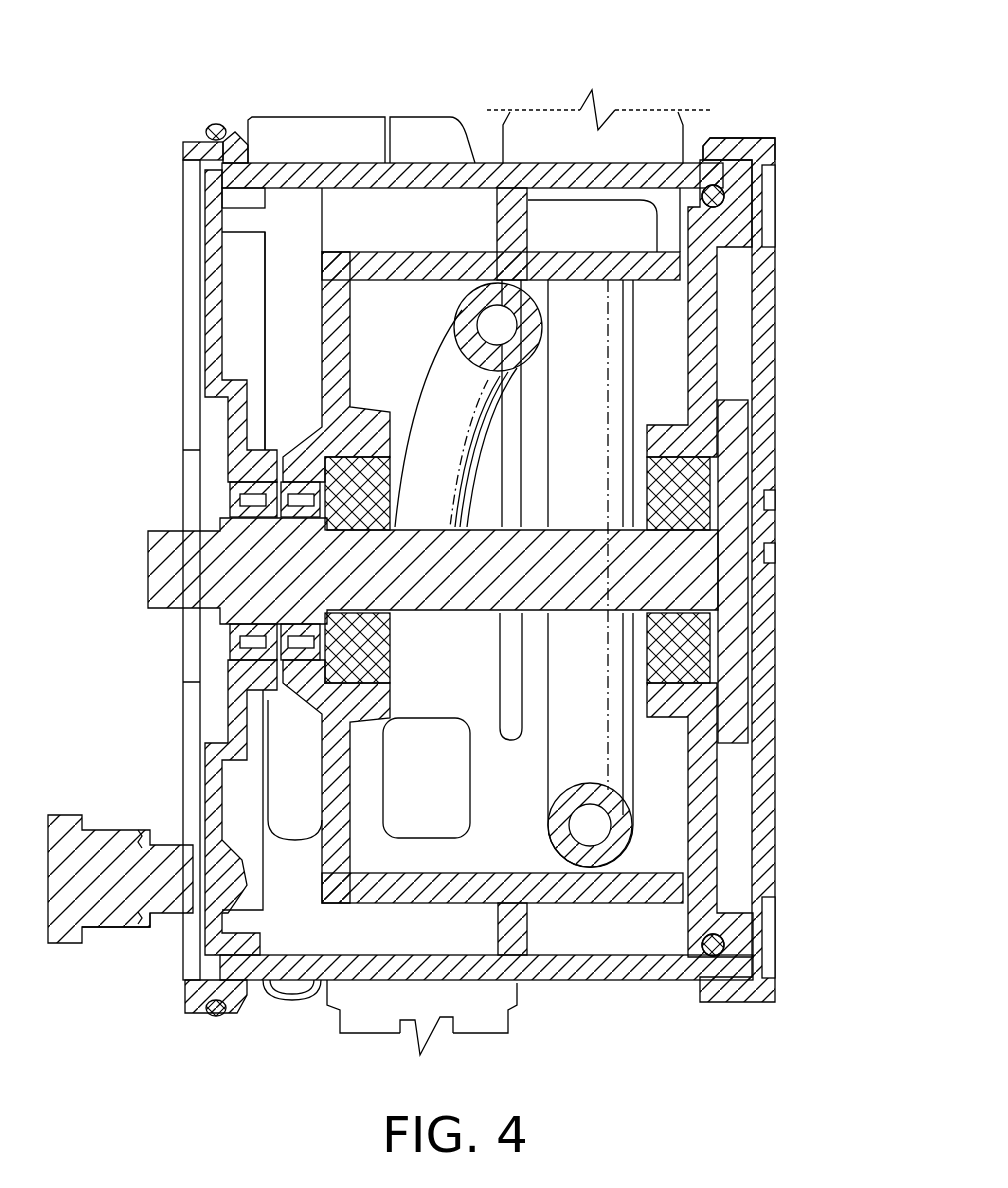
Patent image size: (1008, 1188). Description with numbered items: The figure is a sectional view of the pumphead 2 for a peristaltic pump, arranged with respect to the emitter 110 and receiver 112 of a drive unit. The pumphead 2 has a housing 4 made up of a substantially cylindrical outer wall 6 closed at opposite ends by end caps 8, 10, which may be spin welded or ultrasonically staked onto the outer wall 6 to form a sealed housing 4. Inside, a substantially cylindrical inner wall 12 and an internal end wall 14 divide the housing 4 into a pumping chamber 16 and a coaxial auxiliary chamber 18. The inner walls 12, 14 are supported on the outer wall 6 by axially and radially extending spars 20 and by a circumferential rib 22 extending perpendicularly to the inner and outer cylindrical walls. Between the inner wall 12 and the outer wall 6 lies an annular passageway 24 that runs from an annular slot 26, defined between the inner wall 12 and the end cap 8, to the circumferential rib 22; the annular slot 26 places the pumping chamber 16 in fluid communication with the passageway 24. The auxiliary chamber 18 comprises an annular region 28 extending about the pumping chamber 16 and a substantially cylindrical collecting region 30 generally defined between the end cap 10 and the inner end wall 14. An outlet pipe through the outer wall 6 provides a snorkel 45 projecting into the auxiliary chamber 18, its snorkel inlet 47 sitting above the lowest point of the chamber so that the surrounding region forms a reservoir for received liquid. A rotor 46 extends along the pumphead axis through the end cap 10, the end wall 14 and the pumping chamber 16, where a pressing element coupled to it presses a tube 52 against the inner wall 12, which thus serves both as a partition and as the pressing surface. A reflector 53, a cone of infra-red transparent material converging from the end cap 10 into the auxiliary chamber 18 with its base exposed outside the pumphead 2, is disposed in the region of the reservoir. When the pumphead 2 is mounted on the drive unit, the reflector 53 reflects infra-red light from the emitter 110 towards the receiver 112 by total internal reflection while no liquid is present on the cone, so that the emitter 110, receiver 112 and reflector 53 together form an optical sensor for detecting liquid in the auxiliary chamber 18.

The pumphead 2 is at (748, 132).
The housing 4 is at (275, 172).
The outer wall 6 is at (622, 173).
The end cap 8 is at (765, 808).
The end cap 10 is at (222, 768).
The inner wall 12 is at (558, 262).
The internal end wall 14 is at (335, 383).
The pumping chamber 16 is at (379, 338).
The auxiliary chamber 18 is at (273, 353).
The spars 20 is at (653, 947).
The circumferential rib 22 is at (508, 955).
The annular passageway 24 is at (577, 233).
The annular slot 26 is at (687, 263).
The annular region 28 is at (386, 230).
The collecting region 30 is at (278, 828).
The snorkel 45 is at (295, 767).
The rotor 46 is at (680, 570).
The snorkel inlet 47 is at (290, 703).
The tube 52 is at (578, 830).
The reflector 53 is at (233, 910).
The emitter 110 is at (137, 848).
The receiver 112 is at (137, 925).